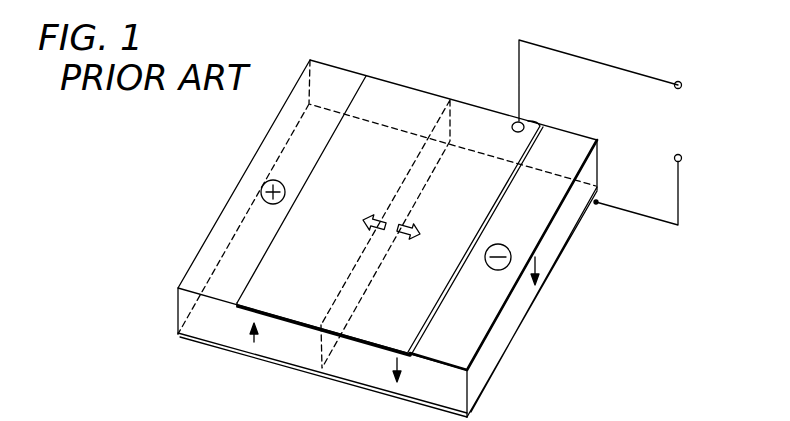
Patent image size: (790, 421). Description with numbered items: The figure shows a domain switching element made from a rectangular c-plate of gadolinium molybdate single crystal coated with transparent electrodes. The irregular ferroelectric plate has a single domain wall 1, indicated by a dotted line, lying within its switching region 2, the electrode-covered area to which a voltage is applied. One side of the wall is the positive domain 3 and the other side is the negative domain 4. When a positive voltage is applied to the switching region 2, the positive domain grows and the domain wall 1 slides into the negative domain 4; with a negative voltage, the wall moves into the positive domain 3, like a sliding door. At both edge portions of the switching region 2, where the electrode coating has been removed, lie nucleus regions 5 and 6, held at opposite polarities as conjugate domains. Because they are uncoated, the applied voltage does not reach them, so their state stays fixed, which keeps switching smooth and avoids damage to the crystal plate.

The domain wall 1 is at (320, 368).
The switching region 2 is at (368, 68).
The positive domain 3 is at (223, 330).
The negative domain 4 is at (368, 368).
The nucleus region 5 is at (310, 55).
The nucleus region 6 is at (544, 118).